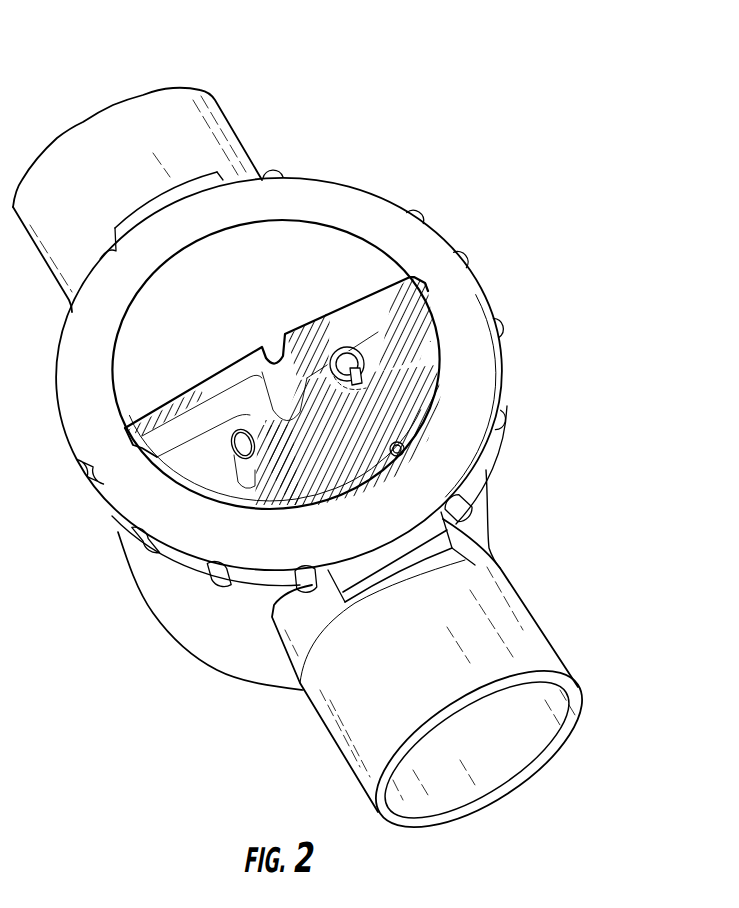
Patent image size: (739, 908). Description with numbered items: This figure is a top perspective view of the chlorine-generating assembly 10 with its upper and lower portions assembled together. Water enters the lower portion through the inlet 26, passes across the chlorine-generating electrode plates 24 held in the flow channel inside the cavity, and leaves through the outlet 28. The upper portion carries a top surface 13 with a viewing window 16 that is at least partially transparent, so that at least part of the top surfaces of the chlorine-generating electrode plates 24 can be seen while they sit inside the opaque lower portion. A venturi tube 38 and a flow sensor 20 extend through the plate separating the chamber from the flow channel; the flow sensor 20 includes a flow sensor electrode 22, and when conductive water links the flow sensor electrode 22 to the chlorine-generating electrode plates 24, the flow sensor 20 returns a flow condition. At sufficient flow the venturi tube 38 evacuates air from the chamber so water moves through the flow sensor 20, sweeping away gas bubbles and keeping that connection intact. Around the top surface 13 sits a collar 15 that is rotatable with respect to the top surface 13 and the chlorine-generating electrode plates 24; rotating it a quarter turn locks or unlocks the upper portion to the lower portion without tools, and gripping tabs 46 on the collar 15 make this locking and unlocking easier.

The chlorine-generating assembly 10 is at (572, 247).
The top surface 13 is at (317, 248).
The collar 15 is at (363, 206).
The viewing window 16 is at (396, 322).
The flow sensor 20 is at (363, 383).
The flow sensor electrode 22 is at (341, 349).
The chlorine-generating electrode plates 24 is at (336, 426).
The inlet 26 is at (193, 86).
The outlet 28 is at (480, 767).
The venturi tube 38 is at (247, 467).
The gripping tabs 46 is at (221, 178).